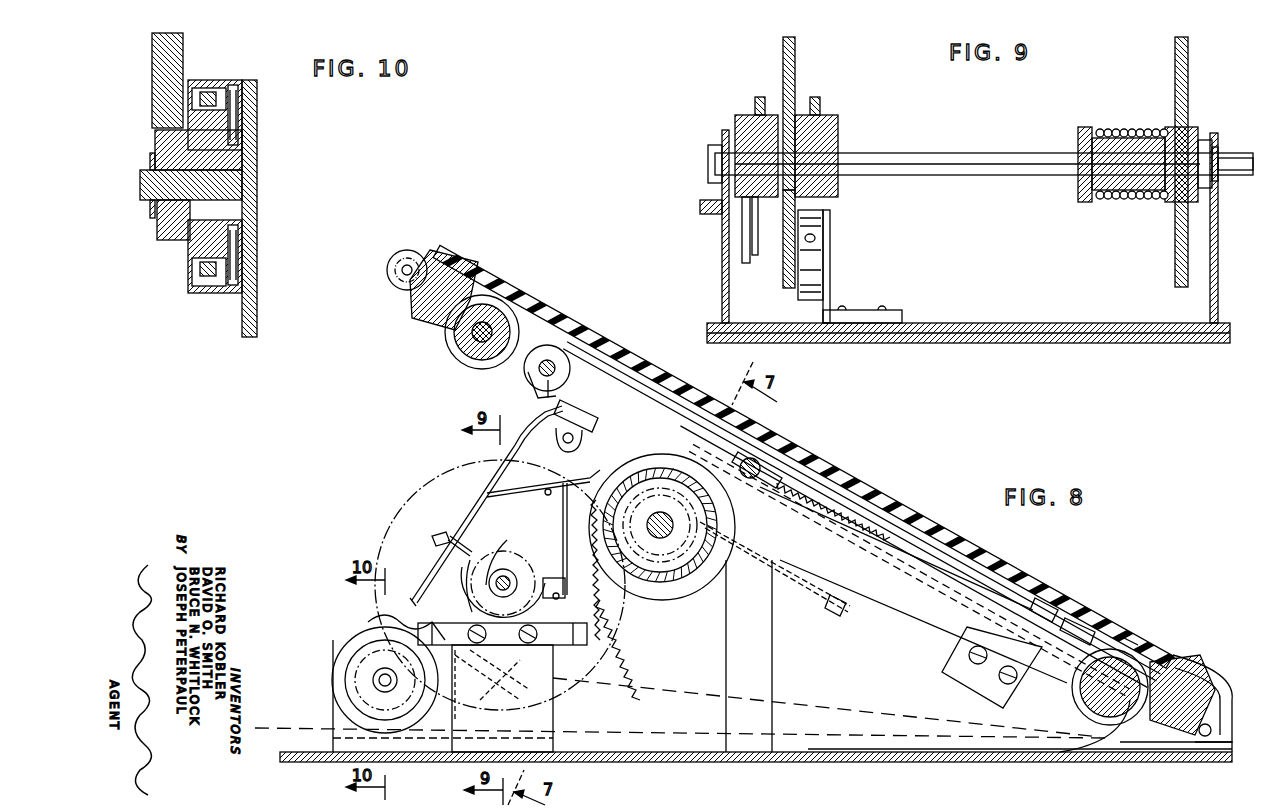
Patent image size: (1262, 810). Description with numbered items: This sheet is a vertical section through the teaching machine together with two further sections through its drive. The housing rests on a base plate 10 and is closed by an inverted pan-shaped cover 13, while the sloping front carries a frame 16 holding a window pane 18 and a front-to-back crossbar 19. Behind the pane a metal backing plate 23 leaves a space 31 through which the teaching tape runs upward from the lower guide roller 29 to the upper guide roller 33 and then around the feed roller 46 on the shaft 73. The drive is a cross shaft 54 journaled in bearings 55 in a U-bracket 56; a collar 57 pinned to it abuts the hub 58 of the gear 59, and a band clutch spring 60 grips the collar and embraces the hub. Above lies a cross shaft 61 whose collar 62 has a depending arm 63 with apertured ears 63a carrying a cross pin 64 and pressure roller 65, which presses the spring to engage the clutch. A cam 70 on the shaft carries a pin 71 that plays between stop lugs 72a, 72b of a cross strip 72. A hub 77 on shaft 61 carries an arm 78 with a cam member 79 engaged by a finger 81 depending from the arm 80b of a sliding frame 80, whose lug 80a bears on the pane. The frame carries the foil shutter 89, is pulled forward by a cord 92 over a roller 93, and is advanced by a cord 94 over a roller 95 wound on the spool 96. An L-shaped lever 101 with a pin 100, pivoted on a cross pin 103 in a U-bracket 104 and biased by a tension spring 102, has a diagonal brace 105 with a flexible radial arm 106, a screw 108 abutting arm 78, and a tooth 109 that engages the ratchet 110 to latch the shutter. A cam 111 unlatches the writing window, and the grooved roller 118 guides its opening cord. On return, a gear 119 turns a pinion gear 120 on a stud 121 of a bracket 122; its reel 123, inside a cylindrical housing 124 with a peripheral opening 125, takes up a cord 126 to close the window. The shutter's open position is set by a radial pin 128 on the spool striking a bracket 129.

In FIG. 9, the base plate 10 is at (1040, 343).
In FIG. 8, the base plate 10 is at (975, 762).
In FIG. 8, the cover 13 is at (1232, 700).
In FIG. 8, the frame 16 is at (420, 320).
In FIG. 8, the window pane 18 is at (985, 560).
In FIG. 8, the crossbar 19 is at (490, 364).
In FIG. 8, the backing plate 23 is at (636, 366).
In FIG. 8, the guide roller 29 is at (1075, 690).
In FIG. 8, the space 31 is at (900, 518).
In FIG. 8, the guide roller 33 is at (448, 345).
In FIG. 8, the feed roller 46 is at (665, 540).
In FIG. 9, the cross shaft 54 is at (965, 153).
In FIG. 8, the cross shaft 54 is at (505, 568).
In FIG. 9, the bearing 55 is at (712, 145).
In FIG. 9, the U-bracket 56 is at (722, 290).
In FIG. 8, the U-bracket 56 is at (553, 718).
In FIG. 9, the collar 57 is at (1105, 127).
In FIG. 9, the hub 58 is at (1132, 200).
In FIG. 9, the gear 59 is at (1188, 82).
In FIG. 8, the gear 59 is at (628, 598).
In FIG. 9, the band clutch spring 60 is at (1150, 127).
In FIG. 8, the cross shaft 61 is at (556, 372).
In FIG. 8, the collar 62 is at (535, 352).
In FIG. 8, the depending arm 63 is at (561, 500).
In FIG. 8, the apertured ears 63a is at (596, 612).
In FIG. 8, the cross pin 64 is at (555, 590).
In FIG. 8, the pressure roller 65 is at (552, 575).
In FIG. 9, the cam 70 is at (740, 115).
In FIG. 8, the cam 70 is at (498, 545).
In FIG. 9, the pin 71 is at (756, 255).
In FIG. 8, the pin 71 is at (455, 712).
In FIG. 9, the cross strip 72 is at (700, 212).
In FIG. 8, the cross strip 72 is at (514, 645).
In FIG. 8, the stop lug 72a is at (600, 668).
In FIG. 9, the stop lug 72b is at (742, 250).
In FIG. 8, the stop lug 72b is at (372, 621).
In FIG. 8, the shaft 73 is at (700, 560).
In FIG. 8, the hub 77 is at (530, 382).
In FIG. 8, the arm 78 is at (918, 621).
In FIG. 8, the cam member 79 is at (965, 688).
In FIG. 8, the frame 80 is at (855, 495).
In FIG. 8, the lug 80a is at (770, 450).
In FIG. 8, the arm 80b is at (1085, 625).
In FIG. 8, the finger 81 is at (1045, 595).
In FIG. 8, the shutter 89 is at (885, 752).
In FIG. 8, the cord 92 is at (678, 735).
In FIG. 8, the roller 93 is at (1222, 757).
In FIG. 8, the cord 94 is at (945, 545).
In FIG. 8, the roller 95 is at (760, 462).
In FIG. 8, the spool 96 is at (665, 600).
In FIG. 9, the pin or screw 100 is at (765, 82).
In FIG. 8, the pin or screw 100 is at (440, 533).
In FIG. 8, the lever 101 is at (484, 491).
In FIG. 8, the tension spring 102 is at (500, 686).
In FIG. 8, the cross pin 103 is at (569, 452).
In FIG. 8, the U-bracket 104 is at (590, 422).
In FIG. 8, the diagonal brace 105 is at (545, 486).
In FIG. 8, the radial arm 106 is at (546, 498).
In FIG. 8, the screw 108 is at (835, 614).
In FIG. 8, the tooth 109 is at (788, 492).
In FIG. 8, the ratchet 110 is at (878, 528).
In FIG. 9, the cam 111 is at (838, 125).
In FIG. 8, the grooved roller 118 is at (394, 262).
In FIG. 10, the gear 119 is at (152, 68).
In FIG. 9, the gear 119 is at (795, 78).
In FIG. 8, the gear 119 is at (378, 520).
In FIG. 10, the pinion gear 120 is at (158, 140).
In FIG. 9, the pinion gear 120 is at (783, 270).
In FIG. 8, the pinion gear 120 is at (340, 678).
In FIG. 10, the stud 121 is at (142, 185).
In FIG. 10, the bracket 122 is at (252, 185).
In FIG. 9, the bracket 122 is at (830, 290).
In FIG. 8, the bracket 122 is at (330, 740).
In FIG. 10, the reel 123 is at (225, 85).
In FIG. 10, the cylindrical housing 124 is at (212, 293).
In FIG. 9, the cylindrical housing 124 is at (808, 300).
In FIG. 10, the peripheral opening 125 is at (240, 240).
In FIG. 9, the peripheral opening 125 is at (815, 238).
In FIG. 8, the cord 126 is at (790, 703).
In FIG. 8, the radial pin 128 is at (728, 598).
In FIG. 8, the bracket 129 is at (773, 652).